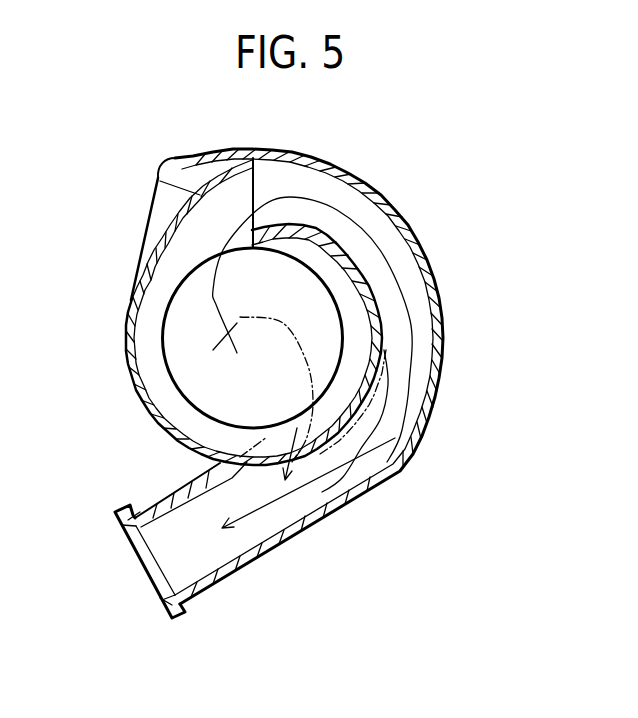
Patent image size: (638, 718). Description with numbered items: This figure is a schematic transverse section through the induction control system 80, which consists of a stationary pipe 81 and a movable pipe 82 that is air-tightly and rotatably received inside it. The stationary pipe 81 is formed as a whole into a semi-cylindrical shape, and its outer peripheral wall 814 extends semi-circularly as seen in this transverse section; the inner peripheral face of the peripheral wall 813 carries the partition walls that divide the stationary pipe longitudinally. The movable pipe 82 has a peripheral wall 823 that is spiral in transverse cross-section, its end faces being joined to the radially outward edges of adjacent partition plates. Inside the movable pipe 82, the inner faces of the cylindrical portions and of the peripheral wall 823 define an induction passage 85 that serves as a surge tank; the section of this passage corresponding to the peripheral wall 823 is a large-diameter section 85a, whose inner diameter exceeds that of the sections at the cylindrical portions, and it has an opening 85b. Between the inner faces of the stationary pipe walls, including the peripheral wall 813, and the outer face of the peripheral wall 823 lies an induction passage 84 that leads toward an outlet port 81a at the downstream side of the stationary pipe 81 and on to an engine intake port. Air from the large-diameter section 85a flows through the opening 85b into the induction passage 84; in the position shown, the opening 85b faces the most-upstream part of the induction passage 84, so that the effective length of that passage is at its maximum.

The induction control system 80 is at (111, 171).
The stationary pipe 81 is at (413, 215).
The peripheral wall 813 is at (345, 171).
The outlet passage 81a is at (205, 562).
The outer peripheral wall 814 is at (178, 493).
The movable pipe 82 is at (113, 329).
The peripheral wall 823 is at (368, 302).
The induction passage 84 is at (418, 378).
The induction passage 85 is at (183, 352).
The large-diameter section 85a is at (170, 262).
The opening 85b is at (258, 172).